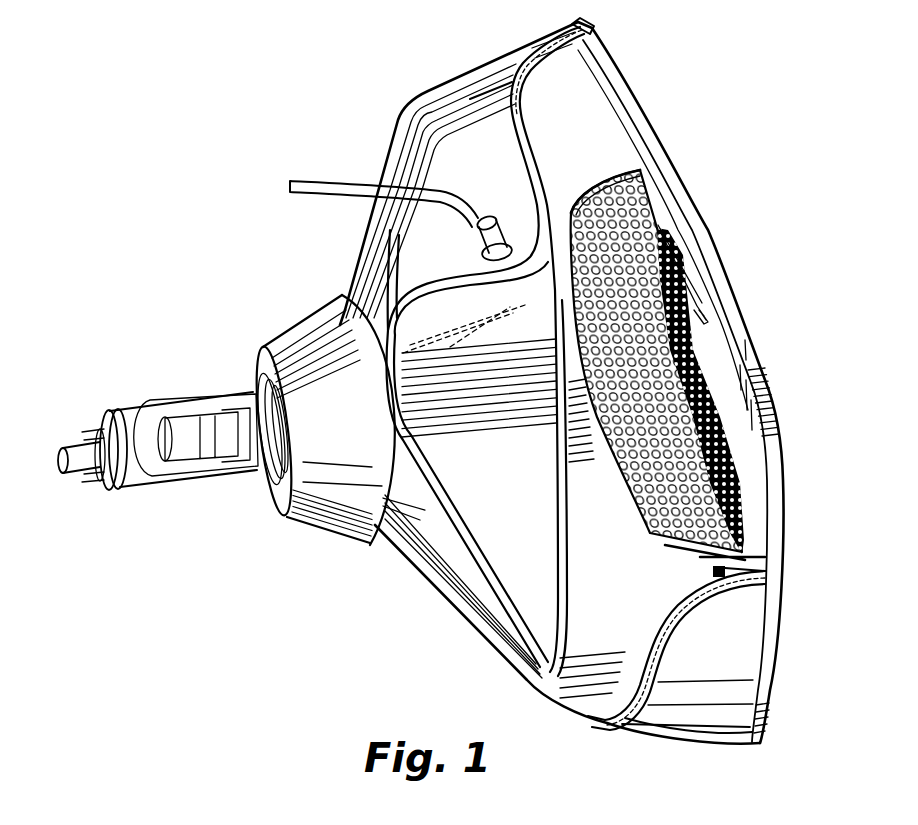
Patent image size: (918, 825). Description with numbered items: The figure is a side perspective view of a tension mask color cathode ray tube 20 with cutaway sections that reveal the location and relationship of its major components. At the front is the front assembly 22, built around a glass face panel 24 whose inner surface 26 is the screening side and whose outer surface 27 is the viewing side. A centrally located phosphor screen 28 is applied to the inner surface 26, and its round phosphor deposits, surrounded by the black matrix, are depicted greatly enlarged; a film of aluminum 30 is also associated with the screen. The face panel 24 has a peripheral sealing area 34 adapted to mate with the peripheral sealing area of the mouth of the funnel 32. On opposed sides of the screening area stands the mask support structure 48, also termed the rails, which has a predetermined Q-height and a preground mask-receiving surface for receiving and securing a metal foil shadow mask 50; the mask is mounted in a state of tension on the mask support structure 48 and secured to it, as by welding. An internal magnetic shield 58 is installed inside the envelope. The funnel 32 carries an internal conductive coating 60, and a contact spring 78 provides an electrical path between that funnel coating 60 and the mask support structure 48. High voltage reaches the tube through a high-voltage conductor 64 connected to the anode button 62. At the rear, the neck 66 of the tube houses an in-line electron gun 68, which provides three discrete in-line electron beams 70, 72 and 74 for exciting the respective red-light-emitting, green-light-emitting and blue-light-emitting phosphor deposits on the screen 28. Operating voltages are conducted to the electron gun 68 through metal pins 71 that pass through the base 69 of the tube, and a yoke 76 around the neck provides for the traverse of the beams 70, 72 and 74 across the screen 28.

The tension mask color cathode ray tube 20 is at (367, 684).
The front assembly 22 is at (722, 757).
The glass face panel 24 is at (646, 118).
The inner surface of face panel 26 is at (727, 355).
The outer surface of face panel 27 is at (784, 533).
The phosphor screen 28 is at (697, 346).
The film of aluminum 30 is at (723, 440).
The funnel 32 is at (408, 120).
The peripheral sealing area 34 is at (576, 24).
The mask support structure 48 is at (672, 236).
The metal foil shadow mask 50 is at (586, 192).
The magnetic shield 58 is at (590, 690).
The internal conductive coating 60 is at (474, 287).
The anode button 62 is at (504, 232).
The high-voltage conductor 64 is at (312, 186).
The neck 66 is at (182, 398).
The in-line electron gun 68 is at (198, 450).
The base 69 is at (100, 427).
The electron beam 70 is at (290, 450).
The metal pins 71 is at (82, 478).
The electron beam 72 is at (290, 430).
The electron beam 74 is at (290, 410).
The yoke 76 is at (308, 300).
The contact spring 78 is at (722, 590).